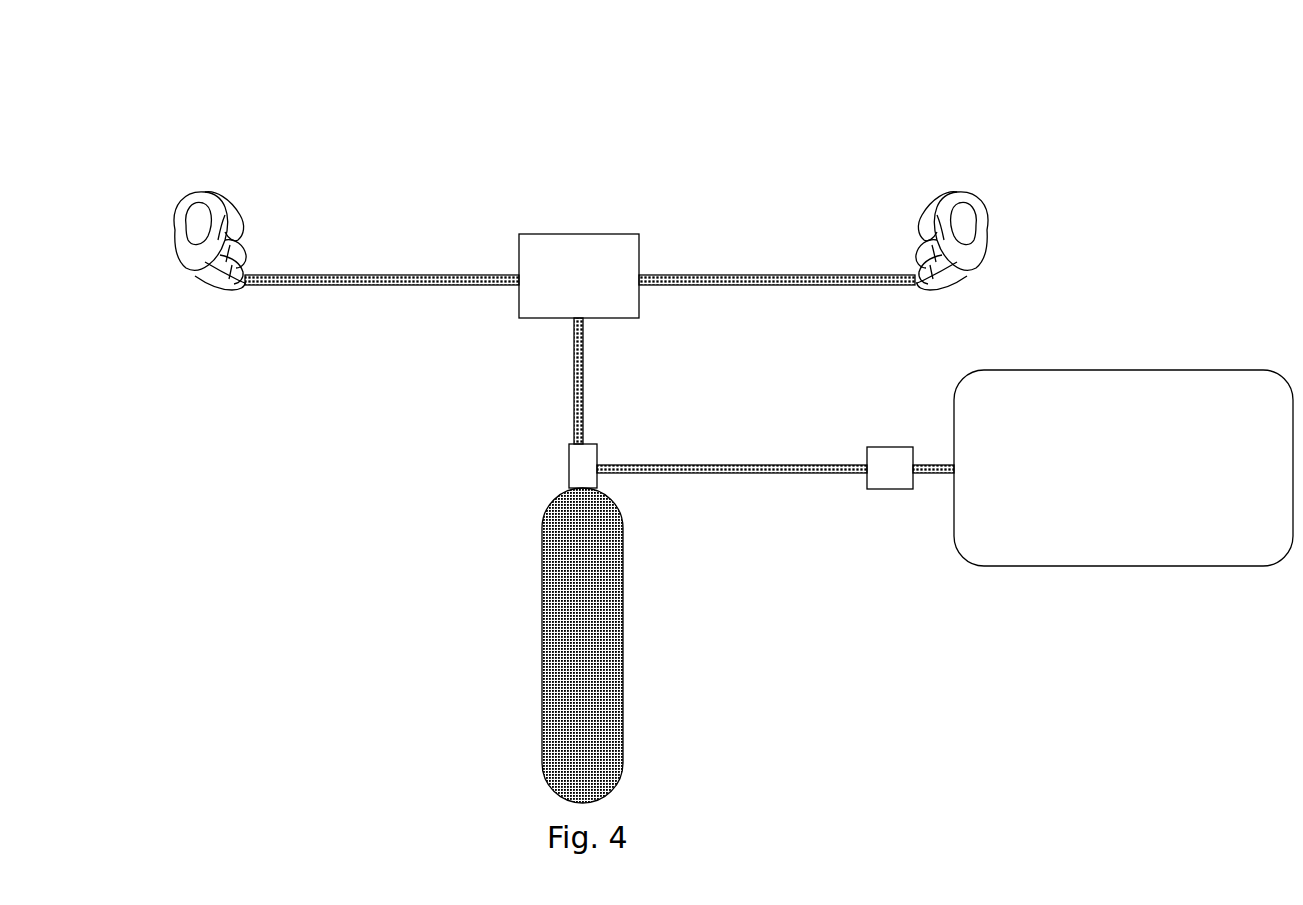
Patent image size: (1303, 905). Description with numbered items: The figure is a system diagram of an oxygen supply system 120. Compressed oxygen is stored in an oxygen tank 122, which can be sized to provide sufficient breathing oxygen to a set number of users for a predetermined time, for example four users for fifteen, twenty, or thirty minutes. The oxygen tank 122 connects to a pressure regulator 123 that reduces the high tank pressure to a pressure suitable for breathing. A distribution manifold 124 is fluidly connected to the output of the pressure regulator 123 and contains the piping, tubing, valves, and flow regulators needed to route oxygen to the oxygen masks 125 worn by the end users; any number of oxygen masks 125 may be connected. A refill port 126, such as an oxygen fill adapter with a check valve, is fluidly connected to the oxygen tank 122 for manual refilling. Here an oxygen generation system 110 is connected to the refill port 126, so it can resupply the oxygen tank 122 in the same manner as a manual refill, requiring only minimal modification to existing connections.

The oxygen supply system 120 is at (167, 117).
The distribution manifold 124 is at (599, 353).
The oxygen mask 125 is at (211, 287).
The pressure regulator 123 is at (558, 468).
The oxygen tank 122 is at (528, 667).
The refill port 126 is at (892, 489).
The oxygen generation system 110 is at (1123, 468).